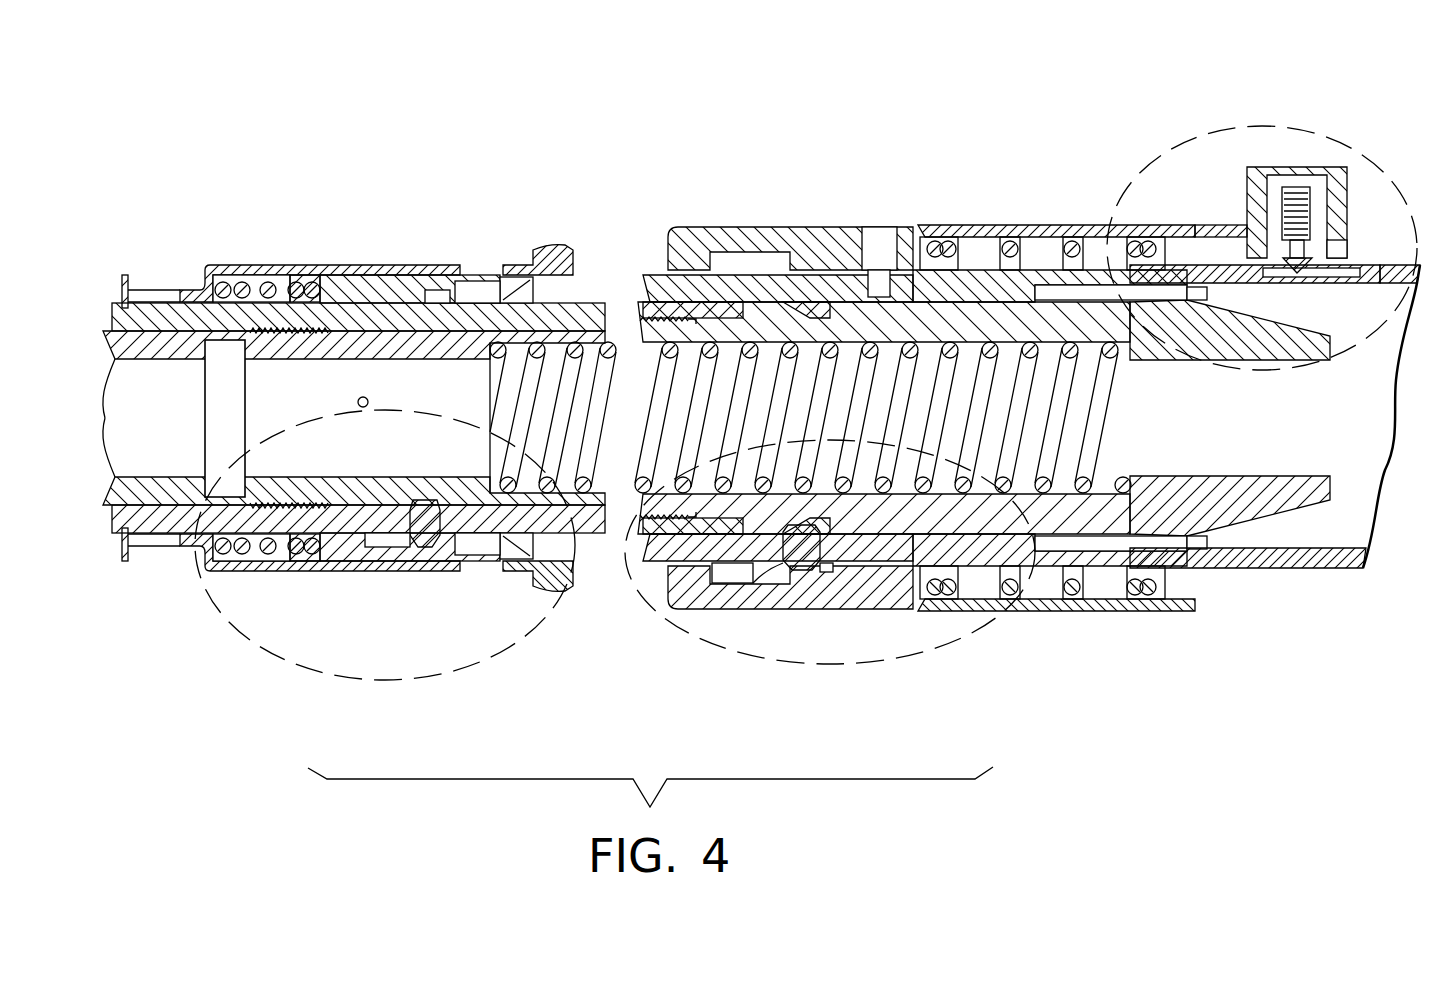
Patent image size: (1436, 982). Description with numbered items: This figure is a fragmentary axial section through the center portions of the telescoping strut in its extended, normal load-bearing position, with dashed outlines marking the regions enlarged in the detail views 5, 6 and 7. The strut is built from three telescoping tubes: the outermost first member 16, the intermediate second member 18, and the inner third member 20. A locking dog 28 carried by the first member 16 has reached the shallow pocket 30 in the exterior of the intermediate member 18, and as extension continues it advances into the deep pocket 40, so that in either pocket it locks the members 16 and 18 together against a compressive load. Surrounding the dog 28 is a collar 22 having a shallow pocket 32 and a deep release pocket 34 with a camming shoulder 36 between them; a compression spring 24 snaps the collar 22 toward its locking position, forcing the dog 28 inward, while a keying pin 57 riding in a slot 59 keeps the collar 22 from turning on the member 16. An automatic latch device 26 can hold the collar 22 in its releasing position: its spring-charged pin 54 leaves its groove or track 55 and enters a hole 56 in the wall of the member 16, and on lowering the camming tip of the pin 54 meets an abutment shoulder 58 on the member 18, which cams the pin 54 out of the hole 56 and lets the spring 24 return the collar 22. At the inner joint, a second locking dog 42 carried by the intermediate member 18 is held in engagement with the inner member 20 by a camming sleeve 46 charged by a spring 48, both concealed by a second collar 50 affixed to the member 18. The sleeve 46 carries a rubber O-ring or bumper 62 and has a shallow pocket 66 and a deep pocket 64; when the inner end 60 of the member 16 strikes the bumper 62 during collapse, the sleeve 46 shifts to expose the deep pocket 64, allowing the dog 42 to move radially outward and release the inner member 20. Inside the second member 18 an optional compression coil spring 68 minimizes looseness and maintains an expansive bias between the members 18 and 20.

The detail view region of FIG. 5 is at (940, 645).
The detail view region of FIG. 6 is at (1192, 133).
The detail view region of FIG. 7 is at (392, 687).
The first telescoping member 16 is at (732, 300).
The intermediate telescoping member 18 is at (484, 316).
The inner telescoping member 20 is at (171, 342).
The collar 22 is at (822, 238).
The compression spring 24 is at (1015, 242).
The latch device 26 is at (1273, 152).
The locking dog 28 is at (800, 556).
The shallow pocket 30 is at (800, 307).
The shallow pocket 32 is at (823, 571).
The deep release pocket 34 is at (738, 577).
The camming shoulder 36 is at (775, 579).
The deep pocket 40 is at (900, 310).
The locking dog 42 is at (421, 543).
The camming sleeve 46 is at (390, 546).
The spring 48 is at (265, 572).
The second collar 50 is at (300, 278).
The spring-charged button or pin 54 is at (1300, 272).
The groove or track 55 is at (1352, 268).
The hole 56 is at (1392, 262).
The keying pin 57 is at (878, 233).
The abutment shoulder 58 is at (1210, 298).
The slot 59 is at (942, 285).
The inner end 60 is at (540, 293).
The rubber O-ring or bumper 62 is at (515, 278).
The deep pocket 64 is at (475, 284).
The shallow pocket 66 is at (436, 294).
The compression coil spring 68 is at (1062, 399).